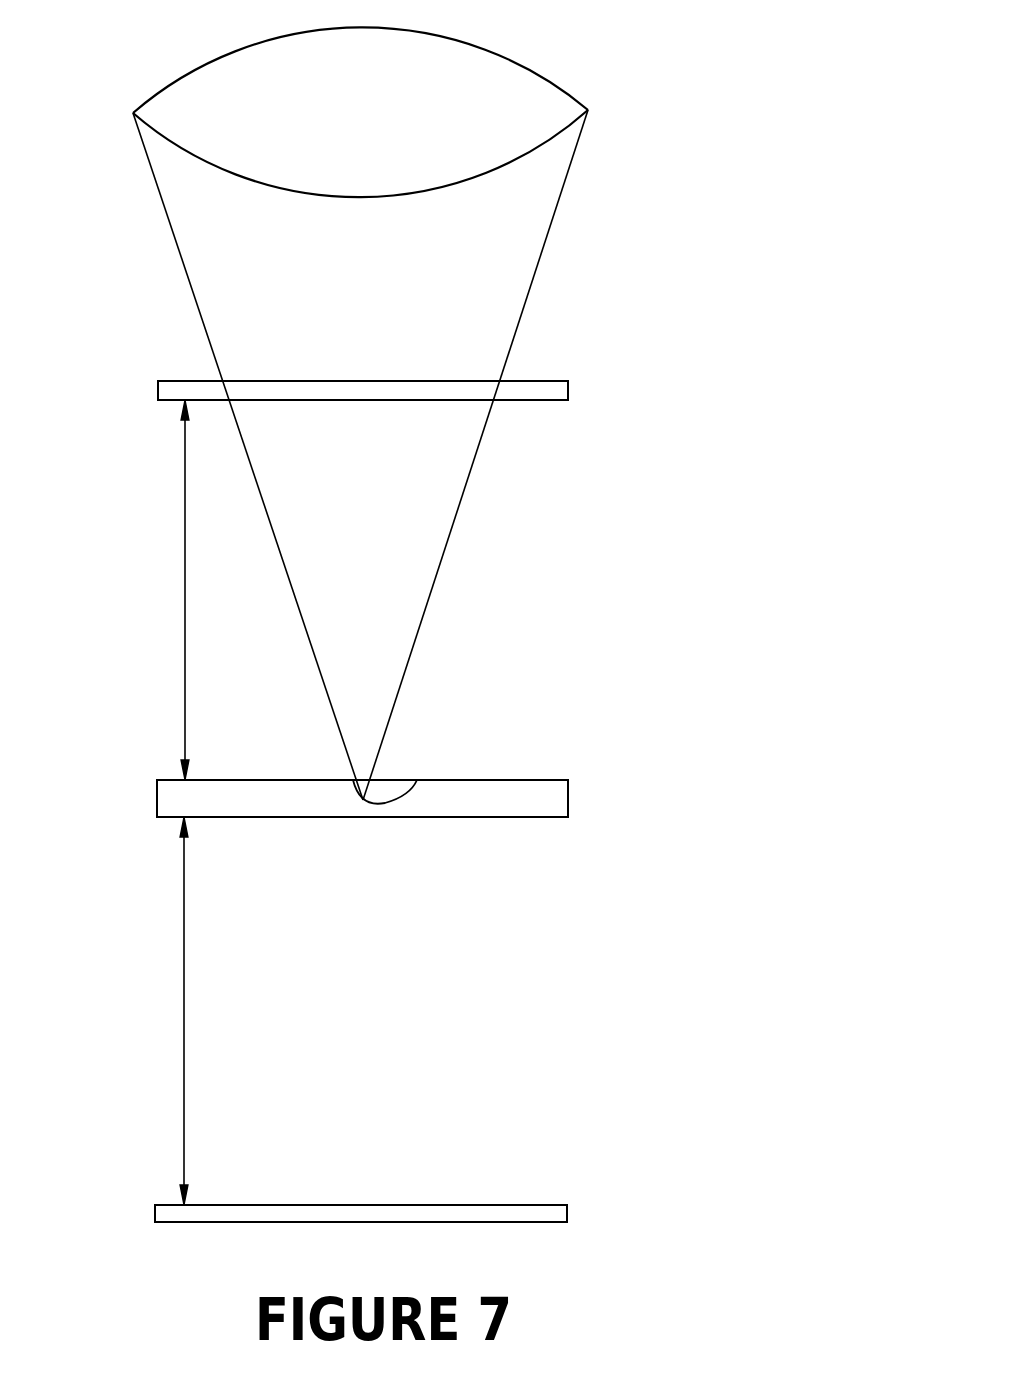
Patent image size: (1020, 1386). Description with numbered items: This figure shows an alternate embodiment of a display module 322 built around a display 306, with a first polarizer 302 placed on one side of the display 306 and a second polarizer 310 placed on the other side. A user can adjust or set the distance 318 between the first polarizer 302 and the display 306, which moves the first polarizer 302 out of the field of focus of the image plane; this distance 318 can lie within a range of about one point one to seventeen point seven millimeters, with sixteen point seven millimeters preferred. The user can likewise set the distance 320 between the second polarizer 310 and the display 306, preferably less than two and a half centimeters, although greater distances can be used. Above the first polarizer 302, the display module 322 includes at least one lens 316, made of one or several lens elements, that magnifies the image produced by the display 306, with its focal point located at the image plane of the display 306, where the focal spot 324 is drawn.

The first polarizer 302 is at (557, 381).
The display 306 is at (568, 797).
The second polarizer 310 is at (548, 1205).
The lens 316 is at (550, 83).
The distance between first polarizer and display 318 is at (185, 572).
The distance between second polarizer and display 320 is at (185, 965).
The display module 322 is at (677, 515).
The focal spot 324 is at (418, 780).